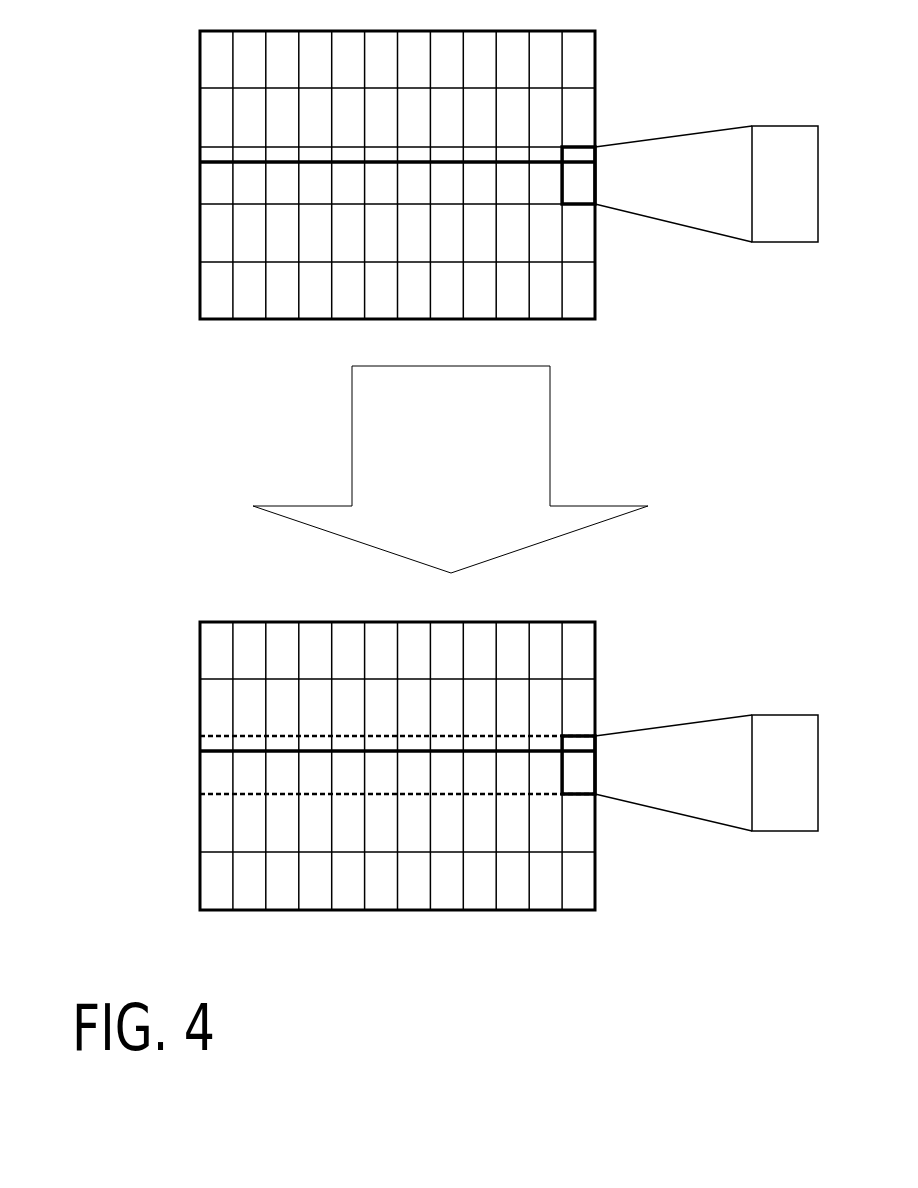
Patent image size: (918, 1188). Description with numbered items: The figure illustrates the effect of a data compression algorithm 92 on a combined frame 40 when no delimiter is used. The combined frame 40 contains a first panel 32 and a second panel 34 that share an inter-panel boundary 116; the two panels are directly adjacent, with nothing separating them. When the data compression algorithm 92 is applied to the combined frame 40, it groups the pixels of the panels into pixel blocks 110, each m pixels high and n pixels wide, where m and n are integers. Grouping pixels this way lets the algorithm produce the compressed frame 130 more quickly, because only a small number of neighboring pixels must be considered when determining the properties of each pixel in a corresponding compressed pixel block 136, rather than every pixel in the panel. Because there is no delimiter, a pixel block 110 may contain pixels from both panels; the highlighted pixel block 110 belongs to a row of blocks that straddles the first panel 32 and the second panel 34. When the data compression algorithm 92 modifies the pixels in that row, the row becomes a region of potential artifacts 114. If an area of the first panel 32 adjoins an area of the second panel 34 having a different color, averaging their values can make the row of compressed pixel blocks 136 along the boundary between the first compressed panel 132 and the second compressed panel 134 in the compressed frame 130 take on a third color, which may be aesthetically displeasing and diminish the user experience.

The first panel 32 is at (353, 31).
The second panel 34 is at (388, 321).
The combined frame 40 is at (504, 175).
The inter-panel boundary 116 is at (214, 164).
The pixel block 110 is at (800, 217).
The data compression algorithm 92 is at (517, 459).
The first compressed panel 132 is at (510, 621).
The second compressed panel 134 is at (397, 849).
The compressed frame 130 is at (507, 763).
The region of potential artifacts 114 is at (200, 795).
The compressed pixel block 136 is at (695, 787).